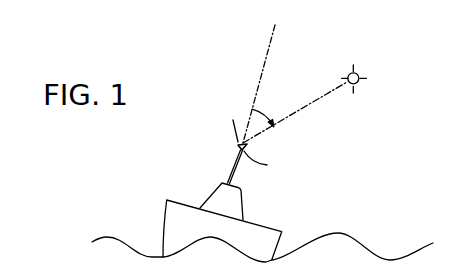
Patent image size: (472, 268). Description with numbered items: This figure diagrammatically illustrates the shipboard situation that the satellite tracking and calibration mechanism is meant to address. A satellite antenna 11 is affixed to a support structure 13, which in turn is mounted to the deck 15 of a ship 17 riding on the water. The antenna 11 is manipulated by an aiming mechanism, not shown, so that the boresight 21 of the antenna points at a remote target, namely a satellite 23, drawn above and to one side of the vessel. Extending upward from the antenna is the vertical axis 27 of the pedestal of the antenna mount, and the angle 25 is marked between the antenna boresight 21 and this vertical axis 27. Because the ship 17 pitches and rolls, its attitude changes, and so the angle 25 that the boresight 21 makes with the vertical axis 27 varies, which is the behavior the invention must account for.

The satellite antenna 11 is at (233, 134).
The support structure 13 is at (243, 197).
The deck 15 is at (265, 225).
The ship 17 is at (162, 213).
The boresight 21 is at (325, 96).
The remote target (satellite) 23 is at (358, 73).
The angle 25 is at (268, 107).
The vertical axis 27 is at (262, 68).